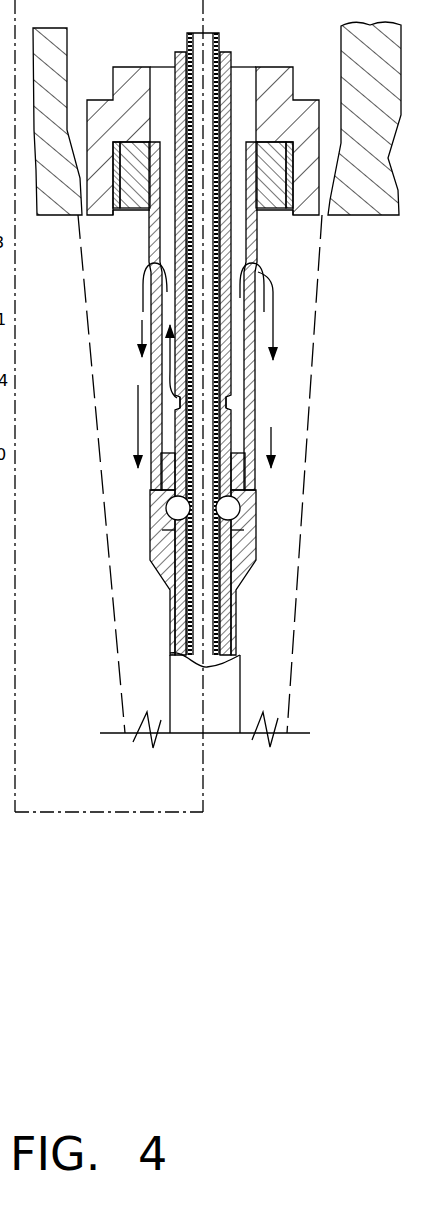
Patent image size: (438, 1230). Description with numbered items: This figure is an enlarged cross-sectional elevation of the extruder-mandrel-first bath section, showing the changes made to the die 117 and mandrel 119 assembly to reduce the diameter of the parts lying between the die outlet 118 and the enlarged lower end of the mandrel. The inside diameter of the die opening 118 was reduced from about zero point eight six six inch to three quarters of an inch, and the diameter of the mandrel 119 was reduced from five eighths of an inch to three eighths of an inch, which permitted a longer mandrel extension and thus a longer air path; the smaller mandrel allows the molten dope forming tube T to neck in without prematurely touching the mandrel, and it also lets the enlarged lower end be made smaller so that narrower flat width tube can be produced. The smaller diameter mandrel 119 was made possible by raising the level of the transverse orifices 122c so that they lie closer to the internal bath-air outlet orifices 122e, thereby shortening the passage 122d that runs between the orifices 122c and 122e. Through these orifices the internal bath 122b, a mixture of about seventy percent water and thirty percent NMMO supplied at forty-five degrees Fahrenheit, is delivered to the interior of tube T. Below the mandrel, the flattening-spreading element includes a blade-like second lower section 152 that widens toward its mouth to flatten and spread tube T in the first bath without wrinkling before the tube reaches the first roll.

The die 117 is at (293, 88).
The die outlet 118 is at (322, 216).
The mandrel 119 is at (258, 386).
The internal bath 122b is at (140, 300).
The transverse orifices 122c is at (230, 403).
The passage 122d is at (240, 362).
The internal bath-air outlet orifices 122e is at (258, 265).
The blade-like second lower section 152 is at (0, 685).
The tube T is at (322, 250).